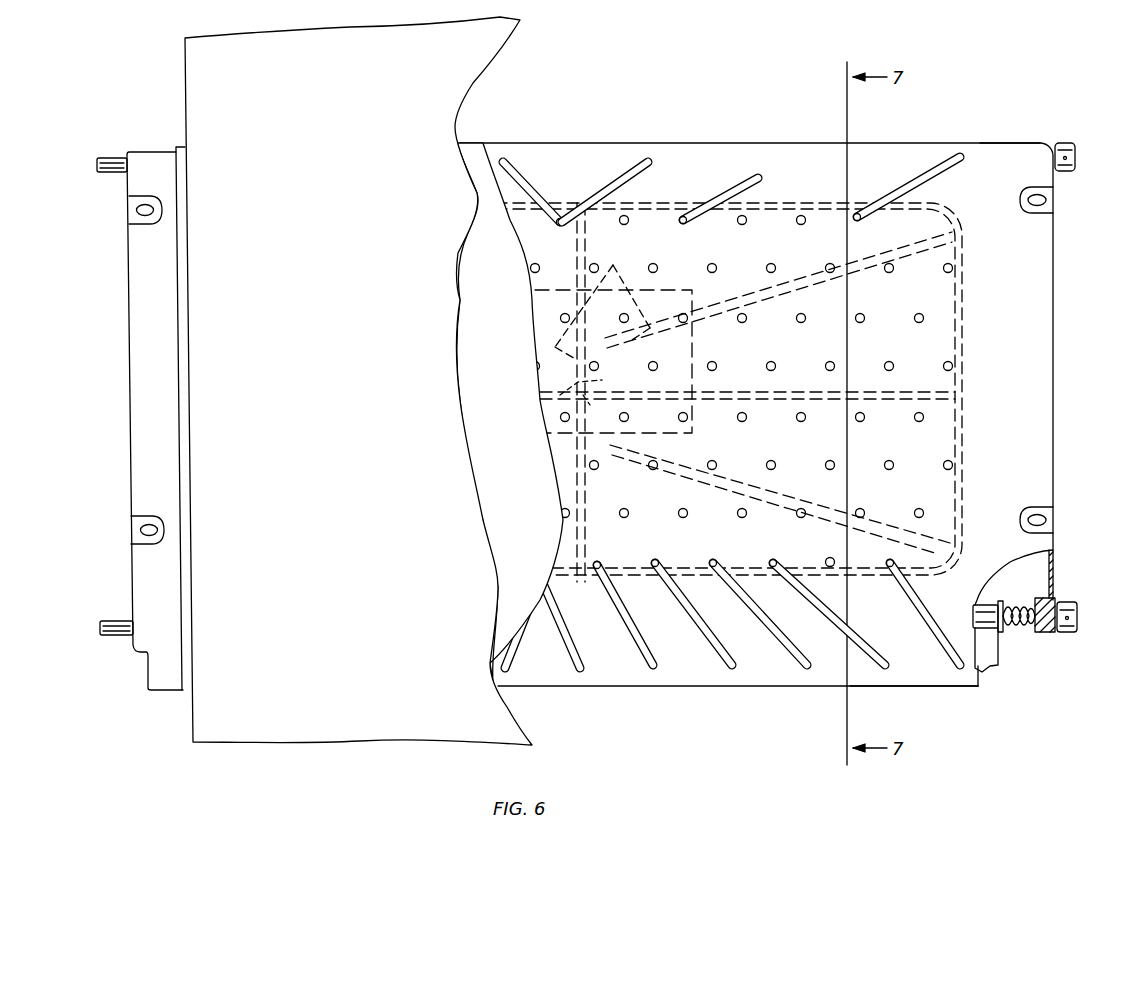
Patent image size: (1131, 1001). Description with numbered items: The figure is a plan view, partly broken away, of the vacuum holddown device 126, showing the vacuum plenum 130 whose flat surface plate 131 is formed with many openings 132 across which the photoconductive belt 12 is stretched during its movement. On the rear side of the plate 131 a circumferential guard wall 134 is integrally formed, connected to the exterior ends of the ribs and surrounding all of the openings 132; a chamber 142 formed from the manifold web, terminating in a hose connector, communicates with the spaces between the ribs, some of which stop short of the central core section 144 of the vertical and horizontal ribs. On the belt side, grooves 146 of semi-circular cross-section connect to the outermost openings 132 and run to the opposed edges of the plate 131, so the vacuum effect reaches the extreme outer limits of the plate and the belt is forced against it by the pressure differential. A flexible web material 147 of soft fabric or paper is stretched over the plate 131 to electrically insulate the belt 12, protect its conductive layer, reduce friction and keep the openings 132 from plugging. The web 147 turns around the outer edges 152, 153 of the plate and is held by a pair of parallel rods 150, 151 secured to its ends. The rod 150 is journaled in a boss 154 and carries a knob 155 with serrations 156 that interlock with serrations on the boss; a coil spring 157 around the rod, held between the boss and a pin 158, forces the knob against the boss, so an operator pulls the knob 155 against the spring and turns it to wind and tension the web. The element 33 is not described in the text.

The photoconductive belt 12 is at (190, 84).
The air passage 33 is at (586, 263).
The vacuum holddown device 126 is at (129, 352).
The vacuum plenum 130 is at (140, 262).
The flat surface plate 131 is at (900, 157).
The openings 132 is at (858, 222).
The circumferential guard wall 134 is at (965, 388).
The chamber 142 is at (470, 305).
The central core section 144 is at (600, 385).
The grooves 146 is at (925, 618).
The flexible web material 147 is at (485, 152).
The rod 150 is at (110, 622).
The rod 151 is at (107, 160).
The outer edge of plate 152 is at (900, 686).
The outer edge of plate 153 is at (1008, 143).
The boss 154 is at (1065, 630).
The knob 155 is at (1077, 612).
The serrations 156 is at (1053, 592).
The coil spring 157 is at (1024, 600).
The pin 158 is at (1000, 633).